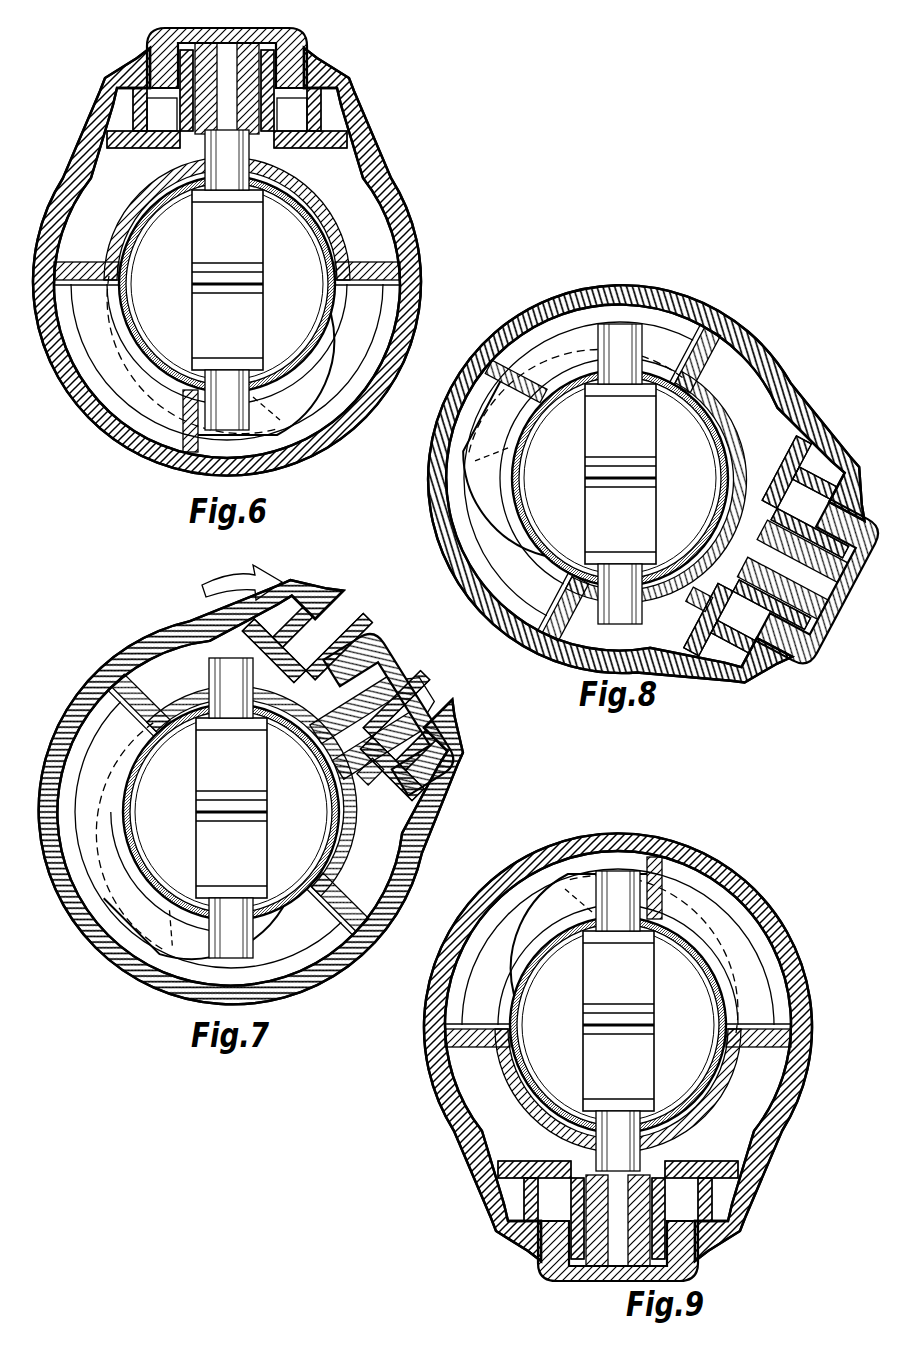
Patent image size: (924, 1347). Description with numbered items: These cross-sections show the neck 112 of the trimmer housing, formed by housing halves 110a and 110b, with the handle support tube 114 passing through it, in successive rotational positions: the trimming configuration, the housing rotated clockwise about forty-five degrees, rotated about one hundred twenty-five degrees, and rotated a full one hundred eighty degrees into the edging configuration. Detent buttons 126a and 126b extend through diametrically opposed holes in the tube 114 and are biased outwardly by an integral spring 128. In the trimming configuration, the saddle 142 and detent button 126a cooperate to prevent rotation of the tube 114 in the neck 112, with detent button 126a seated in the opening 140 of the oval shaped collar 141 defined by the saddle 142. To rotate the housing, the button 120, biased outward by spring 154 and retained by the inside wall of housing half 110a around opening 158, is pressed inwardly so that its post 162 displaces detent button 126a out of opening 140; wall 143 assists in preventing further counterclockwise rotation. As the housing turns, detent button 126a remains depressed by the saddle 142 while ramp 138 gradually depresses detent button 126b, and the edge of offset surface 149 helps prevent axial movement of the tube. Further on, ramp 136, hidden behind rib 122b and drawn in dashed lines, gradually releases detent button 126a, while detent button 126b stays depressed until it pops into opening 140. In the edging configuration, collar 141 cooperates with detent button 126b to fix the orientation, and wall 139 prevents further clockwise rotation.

In FIG. 6, the housing half 110a is at (427, 268).
In FIG. 7, the housing half 110a is at (357, 952).
In FIG. 8, the housing half 110a is at (792, 362).
In FIG. 9, the housing half 110a is at (772, 1162).
In FIG. 6, the housing half 110b is at (362, 430).
In FIG. 7, the housing half 110b is at (102, 1002).
In FIG. 8, the housing half 110b is at (432, 507).
In FIG. 9, the housing half 110b is at (792, 902).
In FIG. 6, the neck 112 is at (405, 150).
In FIG. 7, the neck 112 is at (118, 612).
In FIG. 8, the neck 112 is at (622, 242).
In FIG. 9, the neck 112 is at (597, 802).
In FIG. 6, the tube 114 is at (322, 248).
In FIG. 7, the tube 114 is at (176, 862).
In FIG. 8, the tube 114 is at (562, 542).
In FIG. 9, the tube 114 is at (587, 982).
In FIG. 6, the button 120 is at (150, 42).
In FIG. 7, the button 120 is at (432, 700).
In FIG. 8, the button 120 is at (802, 652).
In FIG. 9, the button 120 is at (562, 1277).
In FIG. 6, the rib 122b is at (92, 335).
In FIG. 7, the rib 122b is at (92, 742).
In FIG. 8, the rib 122b is at (662, 322).
In FIG. 9, the rib 122b is at (618, 965).
In FIG. 6, the detent button 126a is at (246, 150).
In FIG. 7, the detent button 126a is at (256, 747).
In FIG. 8, the detent button 126a is at (592, 402).
In FIG. 9, the detent button 126a is at (624, 872).
In FIG. 6, the detent button 126b is at (246, 378).
In FIG. 7, the detent button 126b is at (232, 942).
In FIG. 8, the detent button 126b is at (582, 542).
In FIG. 9, the detent button 126b is at (612, 1132).
In FIG. 6, the spring 128 is at (196, 292).
In FIG. 7, the spring 128 is at (250, 832).
In FIG. 8, the spring 128 is at (642, 442).
In FIG. 9, the spring 128 is at (652, 1002).
In FIG. 6, the ramp 136 is at (118, 425).
In FIG. 7, the ramp 136 is at (102, 692).
In FIG. 8, the ramp 136 is at (582, 282).
In FIG. 9, the ramp 136 is at (802, 952).
In FIG. 6, the ramp 138 is at (372, 345).
In FIG. 7, the ramp 138 is at (262, 1012).
In FIG. 8, the ramp 138 is at (472, 547).
In FIG. 9, the ramp 138 is at (579, 934).
In FIG. 6, the wall 139 is at (272, 425).
In FIG. 7, the wall 139 is at (62, 892).
In FIG. 8, the wall 139 is at (504, 430).
In FIG. 9, the wall 139 is at (572, 837).
In FIG. 7, the opening 140 is at (352, 800).
In FIG. 8, the opening 140 is at (692, 602).
In FIG. 6, the collar 141 is at (182, 150).
In FIG. 7, the collar 141 is at (330, 700).
In FIG. 8, the collar 141 is at (492, 352).
In FIG. 9, the collar 141 is at (697, 882).
In FIG. 6, the saddle 142 is at (335, 218).
In FIG. 7, the saddle 142 is at (172, 662).
In FIG. 8, the saddle 142 is at (722, 332).
In FIG. 9, the saddle 142 is at (482, 1092).
In FIG. 6, the wall 143 is at (186, 445).
In FIG. 8, the wall 143 is at (516, 381).
In FIG. 9, the wall 143 is at (654, 888).
In FIG. 6, the offset surface 149 is at (112, 220).
In FIG. 7, the offset surface 149 is at (252, 692).
In FIG. 8, the offset surface 149 is at (582, 652).
In FIG. 9, the offset surface 149 is at (618, 1090).
In FIG. 6, the spring 154 is at (150, 115).
In FIG. 7, the opening 158 is at (420, 650).
In FIG. 6, the post 162 is at (295, 75).
In FIG. 7, the post 162 is at (435, 702).
In FIG. 8, the post 162 is at (802, 572).
In FIG. 9, the post 162 is at (617, 1272).